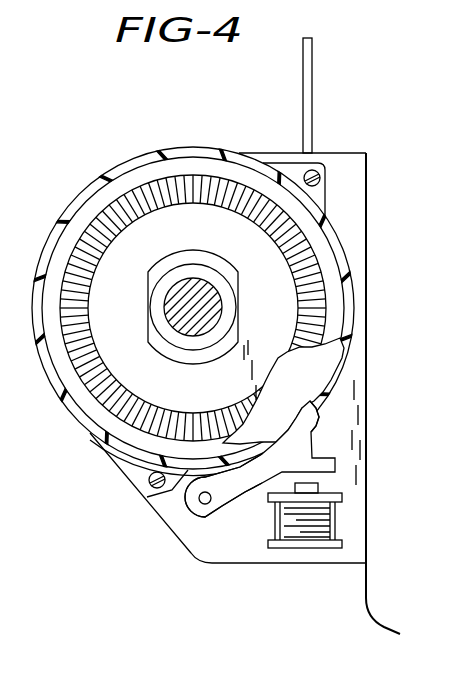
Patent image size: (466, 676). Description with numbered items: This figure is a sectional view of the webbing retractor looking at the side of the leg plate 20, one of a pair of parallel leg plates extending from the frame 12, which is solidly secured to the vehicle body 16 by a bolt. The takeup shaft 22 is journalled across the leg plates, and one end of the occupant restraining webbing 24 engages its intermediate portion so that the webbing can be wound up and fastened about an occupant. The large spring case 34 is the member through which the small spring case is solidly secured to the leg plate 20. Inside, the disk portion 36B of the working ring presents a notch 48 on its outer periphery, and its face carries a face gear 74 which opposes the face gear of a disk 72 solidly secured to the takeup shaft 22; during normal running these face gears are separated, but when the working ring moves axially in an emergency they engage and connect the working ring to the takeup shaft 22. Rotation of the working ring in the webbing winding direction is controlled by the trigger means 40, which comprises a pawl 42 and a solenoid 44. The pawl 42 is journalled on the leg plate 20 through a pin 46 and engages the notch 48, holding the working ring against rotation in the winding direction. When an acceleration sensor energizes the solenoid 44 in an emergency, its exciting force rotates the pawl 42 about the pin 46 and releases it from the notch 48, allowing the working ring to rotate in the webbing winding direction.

The frame 12 is at (367, 180).
The vehicle body 16 is at (366, 600).
The leg plate 20 is at (354, 157).
The takeup shaft 22 is at (218, 297).
The occupant restraining webbing 24 is at (313, 96).
The large spring case 34 is at (186, 146).
The disk portion 36B is at (340, 352).
The trigger means 40 is at (348, 498).
The pawl 42 is at (227, 507).
The solenoid 44 is at (332, 528).
The pin 46 is at (207, 504).
The notch 48 is at (318, 424).
The disk 72 is at (322, 267).
The face gear 74 is at (305, 240).